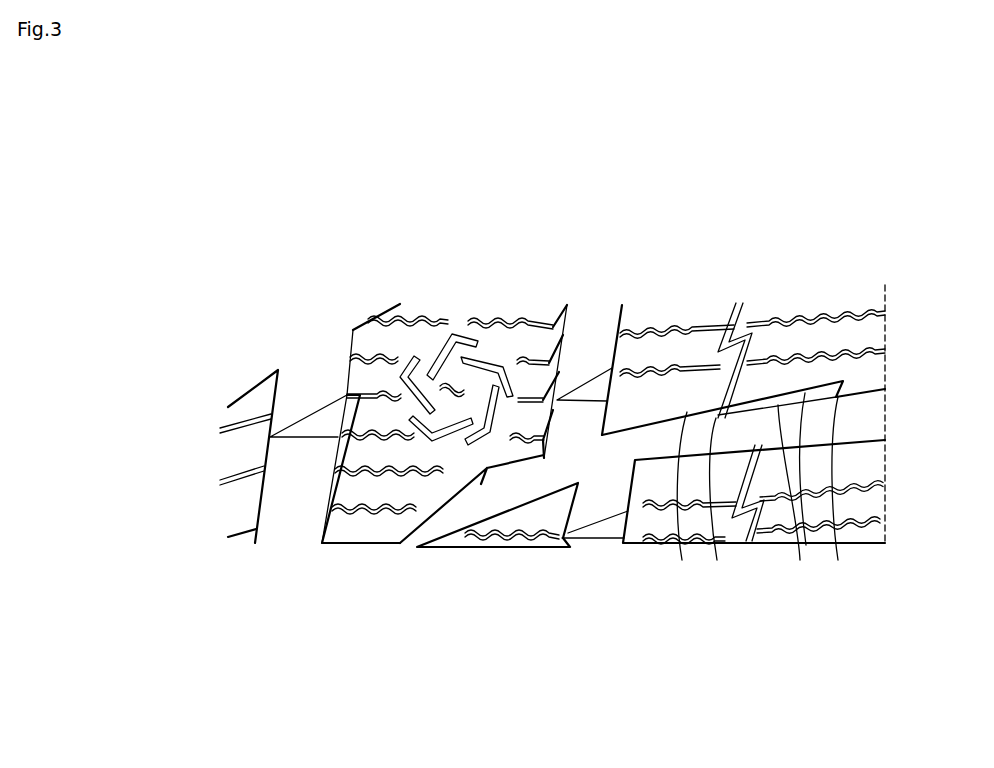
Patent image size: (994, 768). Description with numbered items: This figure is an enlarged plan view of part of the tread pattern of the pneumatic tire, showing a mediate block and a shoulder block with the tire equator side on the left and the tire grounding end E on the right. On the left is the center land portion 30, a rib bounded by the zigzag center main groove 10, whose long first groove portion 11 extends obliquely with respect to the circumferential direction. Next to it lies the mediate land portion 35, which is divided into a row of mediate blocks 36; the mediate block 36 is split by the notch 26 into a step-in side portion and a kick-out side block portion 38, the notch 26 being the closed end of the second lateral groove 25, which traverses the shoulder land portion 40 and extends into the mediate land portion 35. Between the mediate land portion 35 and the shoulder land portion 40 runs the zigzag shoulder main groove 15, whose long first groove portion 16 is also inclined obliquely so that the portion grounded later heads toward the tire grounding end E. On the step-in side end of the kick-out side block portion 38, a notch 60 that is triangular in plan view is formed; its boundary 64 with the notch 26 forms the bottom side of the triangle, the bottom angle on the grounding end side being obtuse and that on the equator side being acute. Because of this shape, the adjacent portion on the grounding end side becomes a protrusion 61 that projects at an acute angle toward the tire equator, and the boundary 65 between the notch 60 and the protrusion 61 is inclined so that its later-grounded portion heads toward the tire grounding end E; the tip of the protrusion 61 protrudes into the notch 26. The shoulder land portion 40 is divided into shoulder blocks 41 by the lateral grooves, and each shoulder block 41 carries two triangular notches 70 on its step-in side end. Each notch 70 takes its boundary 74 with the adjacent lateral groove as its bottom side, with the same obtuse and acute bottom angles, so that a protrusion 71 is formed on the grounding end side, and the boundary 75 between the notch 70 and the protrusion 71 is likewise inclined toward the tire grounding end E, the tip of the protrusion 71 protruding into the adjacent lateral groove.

The center main groove 10 is at (326, 600).
The first groove portion 11 is at (304, 533).
The shoulder main groove 15 is at (601, 521).
The first groove portion 16 is at (592, 430).
The second lateral groove 25 is at (862, 423).
The notch 26 is at (435, 525).
The center land portion 30 is at (274, 360).
The mediate land portion 35 is at (418, 370).
The mediate block 36 is at (442, 386).
The kick-out side block portion 38 is at (373, 343).
The shoulder land portion 40 is at (769, 399).
The shoulder block 41 is at (740, 303).
The notch 60 is at (468, 485).
The protrusion 61 is at (483, 481).
The boundary 64 is at (487, 473).
The boundary 65 is at (488, 472).
The notch 70 is at (800, 578).
The protrusion 71 is at (839, 577).
The boundary 74 is at (748, 541).
The boundary 75 is at (845, 380).
The tire grounding end E is at (886, 284).